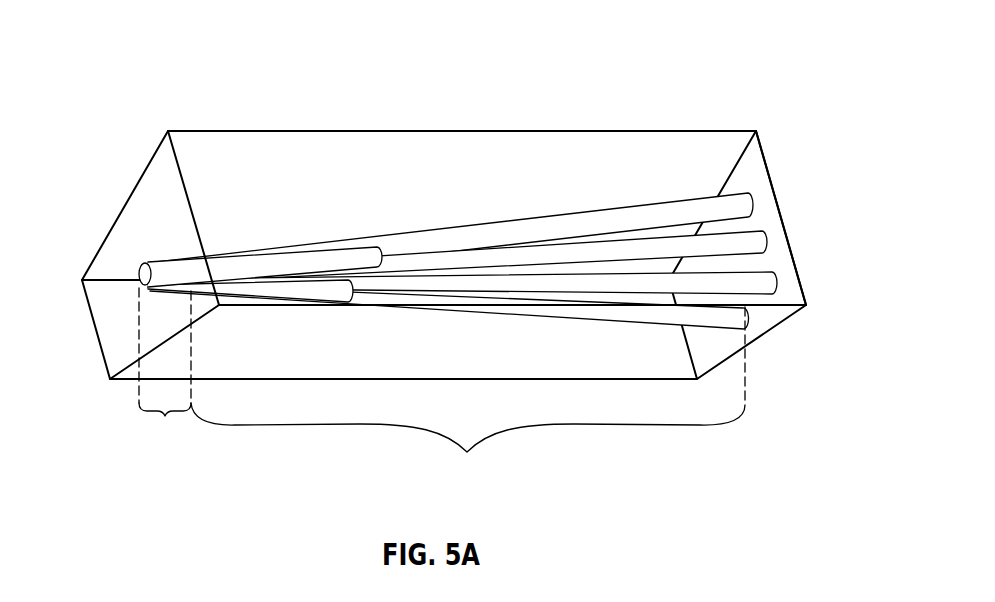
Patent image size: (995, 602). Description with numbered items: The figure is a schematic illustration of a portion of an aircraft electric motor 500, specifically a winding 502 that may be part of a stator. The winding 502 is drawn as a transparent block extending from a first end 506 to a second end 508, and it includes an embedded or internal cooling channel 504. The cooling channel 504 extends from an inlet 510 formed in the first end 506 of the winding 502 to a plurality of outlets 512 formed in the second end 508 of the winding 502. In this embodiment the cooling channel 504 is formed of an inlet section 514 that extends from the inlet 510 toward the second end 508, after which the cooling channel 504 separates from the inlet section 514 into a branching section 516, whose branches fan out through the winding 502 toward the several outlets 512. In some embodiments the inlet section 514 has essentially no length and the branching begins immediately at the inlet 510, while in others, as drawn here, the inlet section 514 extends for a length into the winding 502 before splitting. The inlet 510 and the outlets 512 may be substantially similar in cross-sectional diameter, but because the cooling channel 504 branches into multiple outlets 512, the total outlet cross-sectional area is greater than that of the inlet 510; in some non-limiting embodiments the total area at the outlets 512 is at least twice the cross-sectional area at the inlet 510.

The aircraft electric motor 500 is at (128, 43).
The winding 502 is at (565, 152).
The cooling channel 504 is at (248, 262).
The first end 506 is at (153, 199).
The second end 508 is at (763, 148).
The inlet 510 is at (139, 274).
The outlets 512 is at (750, 201).
The inlet section 514 is at (165, 370).
The branching section 516 is at (468, 398).